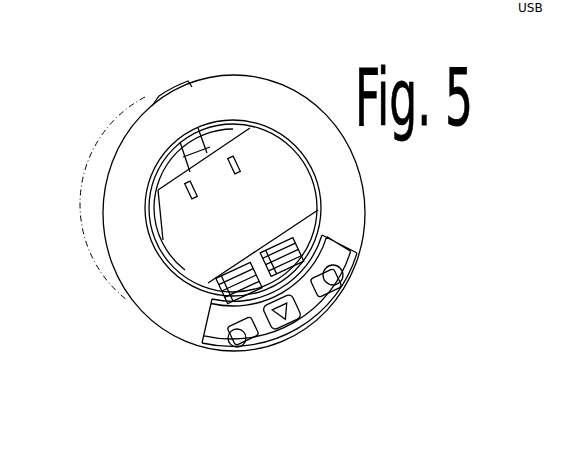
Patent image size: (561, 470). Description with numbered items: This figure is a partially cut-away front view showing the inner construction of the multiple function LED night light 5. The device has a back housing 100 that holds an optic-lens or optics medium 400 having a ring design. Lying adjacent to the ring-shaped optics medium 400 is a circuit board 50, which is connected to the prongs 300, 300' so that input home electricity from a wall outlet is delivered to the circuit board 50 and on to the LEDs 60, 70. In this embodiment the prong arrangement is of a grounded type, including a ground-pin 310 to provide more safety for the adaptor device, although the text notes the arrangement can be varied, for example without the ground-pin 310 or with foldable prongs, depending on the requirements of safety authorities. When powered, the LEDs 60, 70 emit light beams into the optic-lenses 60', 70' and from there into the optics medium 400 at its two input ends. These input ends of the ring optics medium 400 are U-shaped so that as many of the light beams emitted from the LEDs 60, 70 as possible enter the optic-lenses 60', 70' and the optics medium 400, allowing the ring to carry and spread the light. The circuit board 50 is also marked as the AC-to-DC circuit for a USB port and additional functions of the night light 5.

The multiple function LED night light 5 is at (250, 80).
The back housing 100 is at (177, 78).
The optic-lens or optics medium 400 is at (123, 208).
The circuit board 50 is at (167, 245).
The prong 300 is at (202, 320).
The prong 300' is at (342, 217).
The ground-pin 310 is at (297, 328).
The LED 60 is at (257, 372).
The optic-lens 60' is at (201, 392).
The LED 70 is at (351, 314).
The optic-lens 70' is at (400, 267).